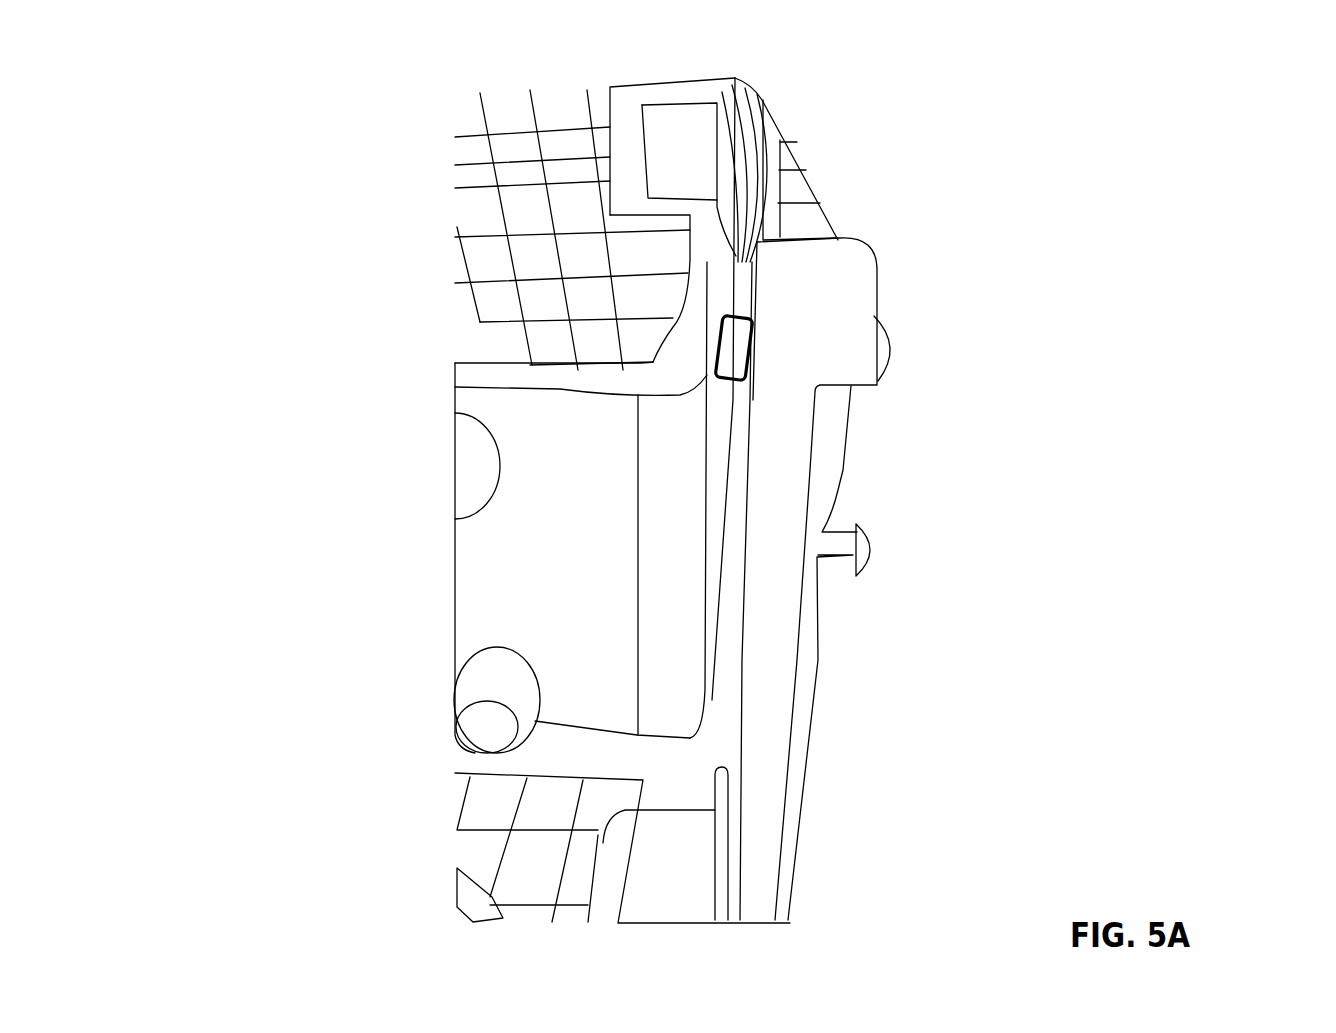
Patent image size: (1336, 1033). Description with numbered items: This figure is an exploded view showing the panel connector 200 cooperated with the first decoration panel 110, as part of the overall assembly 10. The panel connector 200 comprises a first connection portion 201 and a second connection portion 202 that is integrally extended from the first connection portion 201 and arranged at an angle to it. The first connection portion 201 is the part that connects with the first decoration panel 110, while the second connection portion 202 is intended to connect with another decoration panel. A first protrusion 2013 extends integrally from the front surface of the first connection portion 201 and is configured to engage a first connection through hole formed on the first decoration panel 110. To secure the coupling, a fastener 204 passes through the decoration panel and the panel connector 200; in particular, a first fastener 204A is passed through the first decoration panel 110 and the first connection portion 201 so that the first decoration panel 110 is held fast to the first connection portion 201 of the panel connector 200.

The vehicle / apparatus 10 is at (978, 121).
The first decoration panel 110 is at (750, 143).
The panel connector 200 is at (269, 552).
The first connection portion 201 is at (653, 377).
The second connection portion 202 is at (525, 511).
The first protrusion 2013 is at (745, 342).
The fastener 204 is at (1177, 380).
The first fastener 204A is at (887, 352).